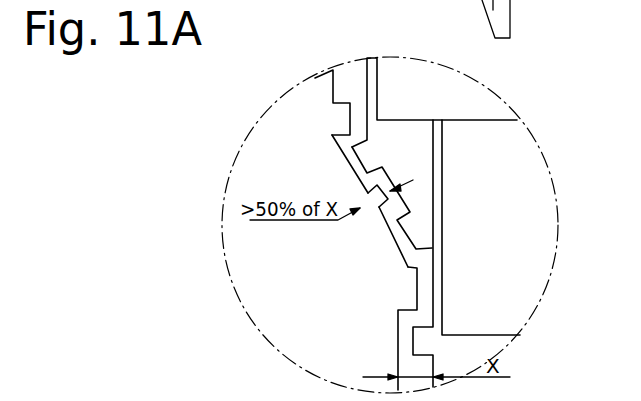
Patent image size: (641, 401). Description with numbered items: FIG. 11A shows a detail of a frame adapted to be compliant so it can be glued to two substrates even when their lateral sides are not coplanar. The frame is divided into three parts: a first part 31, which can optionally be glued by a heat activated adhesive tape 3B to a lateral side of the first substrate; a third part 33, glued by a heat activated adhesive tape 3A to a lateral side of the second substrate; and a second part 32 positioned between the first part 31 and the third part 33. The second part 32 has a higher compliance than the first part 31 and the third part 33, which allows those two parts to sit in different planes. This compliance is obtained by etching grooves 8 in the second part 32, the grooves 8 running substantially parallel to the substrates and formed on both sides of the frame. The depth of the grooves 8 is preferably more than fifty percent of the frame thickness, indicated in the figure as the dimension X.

The heat activated adhesive tape 3A is at (372, 90).
The heat activated adhesive tape 3B is at (440, 300).
The grooves 8 is at (343, 118).
The first part 31 is at (407, 333).
The second part 32 is at (330, 165).
The third part 33 is at (348, 83).